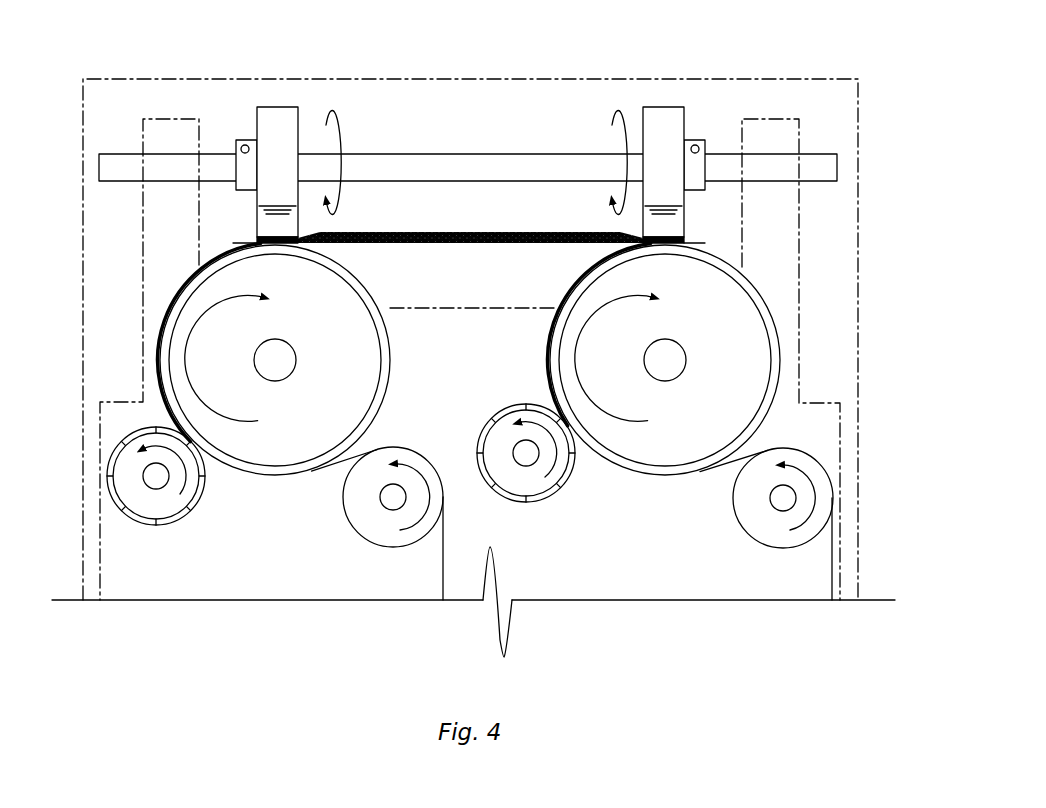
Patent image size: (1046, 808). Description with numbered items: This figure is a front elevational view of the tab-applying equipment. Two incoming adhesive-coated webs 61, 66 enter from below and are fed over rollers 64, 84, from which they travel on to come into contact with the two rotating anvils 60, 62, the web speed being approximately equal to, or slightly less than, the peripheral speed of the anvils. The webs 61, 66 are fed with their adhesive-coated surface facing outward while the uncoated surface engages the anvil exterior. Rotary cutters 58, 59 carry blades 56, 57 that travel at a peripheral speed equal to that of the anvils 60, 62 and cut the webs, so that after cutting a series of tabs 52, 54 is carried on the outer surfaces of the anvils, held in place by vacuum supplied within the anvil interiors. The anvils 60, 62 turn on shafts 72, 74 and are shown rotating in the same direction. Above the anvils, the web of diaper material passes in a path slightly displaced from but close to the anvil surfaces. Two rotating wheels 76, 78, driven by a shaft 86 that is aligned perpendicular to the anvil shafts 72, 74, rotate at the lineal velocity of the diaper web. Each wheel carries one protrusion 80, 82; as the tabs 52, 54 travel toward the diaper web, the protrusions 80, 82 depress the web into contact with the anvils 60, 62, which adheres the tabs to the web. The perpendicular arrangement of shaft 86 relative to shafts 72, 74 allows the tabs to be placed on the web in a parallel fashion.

The tab 52 is at (171, 305).
The tab 54 is at (562, 297).
The blade 56 is at (125, 510).
The blade 57 is at (513, 503).
The rotary cutter 58 is at (145, 497).
The rotary cutter 59 is at (557, 477).
The anvil 60 is at (339, 420).
The incoming web 61 is at (443, 570).
The anvil 62 is at (729, 420).
The roller 64 is at (370, 515).
The incoming web 66 is at (832, 570).
The shaft 72 is at (284, 357).
The shaft 74 is at (674, 357).
The rotating wheel 76 is at (270, 115).
The rotating wheel 78 is at (655, 115).
The protrusion 80 is at (267, 222).
The protrusion 82 is at (673, 225).
The roller 84 is at (758, 508).
The shaft 86 is at (821, 160).